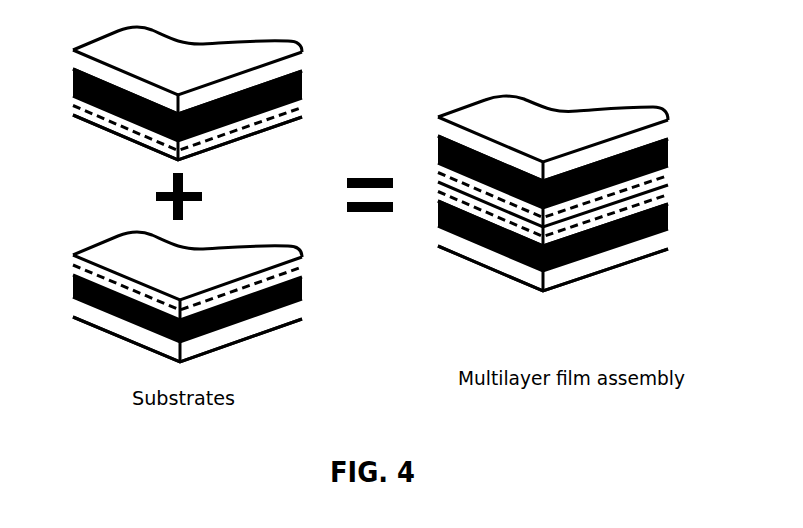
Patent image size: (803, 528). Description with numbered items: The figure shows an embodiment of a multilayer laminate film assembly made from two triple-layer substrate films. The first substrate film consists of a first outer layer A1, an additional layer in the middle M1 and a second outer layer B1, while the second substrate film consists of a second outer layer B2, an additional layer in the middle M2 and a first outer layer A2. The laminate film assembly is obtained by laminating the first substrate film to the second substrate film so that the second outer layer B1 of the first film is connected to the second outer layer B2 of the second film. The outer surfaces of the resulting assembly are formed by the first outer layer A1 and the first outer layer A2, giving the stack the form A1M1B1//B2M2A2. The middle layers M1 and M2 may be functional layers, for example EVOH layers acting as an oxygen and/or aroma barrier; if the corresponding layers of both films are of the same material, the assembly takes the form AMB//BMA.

The first outer layer of the first substrate film A1 is at (370, 115).
The additional layer in the middle of the first substrate film M1 is at (372, 138).
The second outer layer of the first substrate film B1 is at (370, 156).
The second outer layer of the second substrate film B2 is at (370, 246).
The additional layer in the middle of the second substrate film M2 is at (372, 271).
The first outer layer of the second substrate film A2 is at (370, 294).